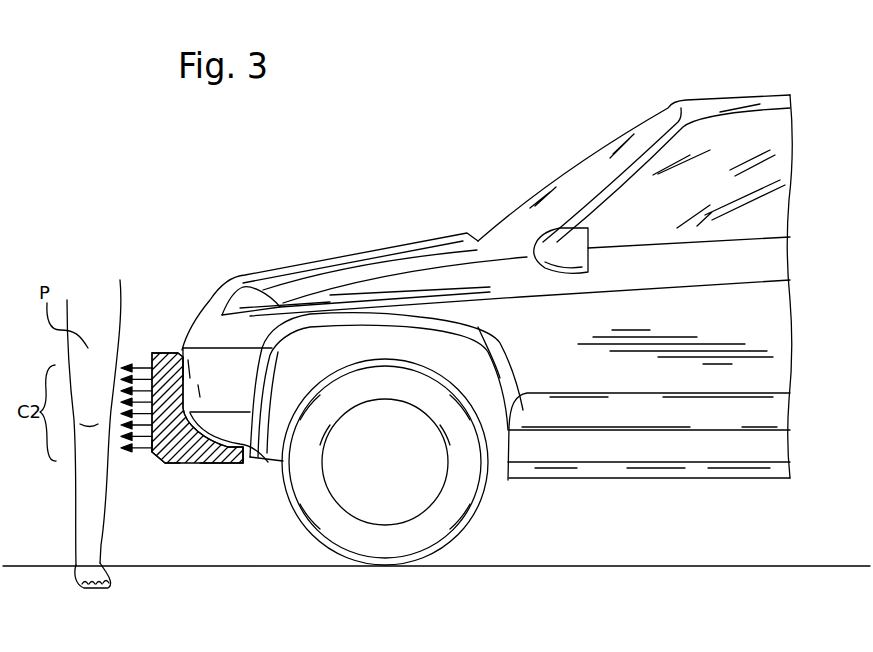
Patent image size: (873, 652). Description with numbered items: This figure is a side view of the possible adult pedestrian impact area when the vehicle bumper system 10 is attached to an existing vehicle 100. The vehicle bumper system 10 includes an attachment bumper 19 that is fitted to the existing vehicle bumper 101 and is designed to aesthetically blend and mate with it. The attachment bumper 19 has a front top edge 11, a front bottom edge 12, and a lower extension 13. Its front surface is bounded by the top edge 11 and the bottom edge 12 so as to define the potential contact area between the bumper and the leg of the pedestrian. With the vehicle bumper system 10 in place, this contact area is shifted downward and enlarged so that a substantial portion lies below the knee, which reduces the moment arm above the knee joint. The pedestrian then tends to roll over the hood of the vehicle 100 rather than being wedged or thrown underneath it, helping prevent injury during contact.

The existing vehicle 100 is at (718, 72).
The existing vehicle bumper 101 is at (230, 368).
The vehicle bumper system 10 is at (178, 440).
The front top edge 11 is at (152, 352).
The front bottom edge 12 is at (160, 455).
The lower extension 13 is at (222, 463).
The attachment bumper 19 is at (167, 372).